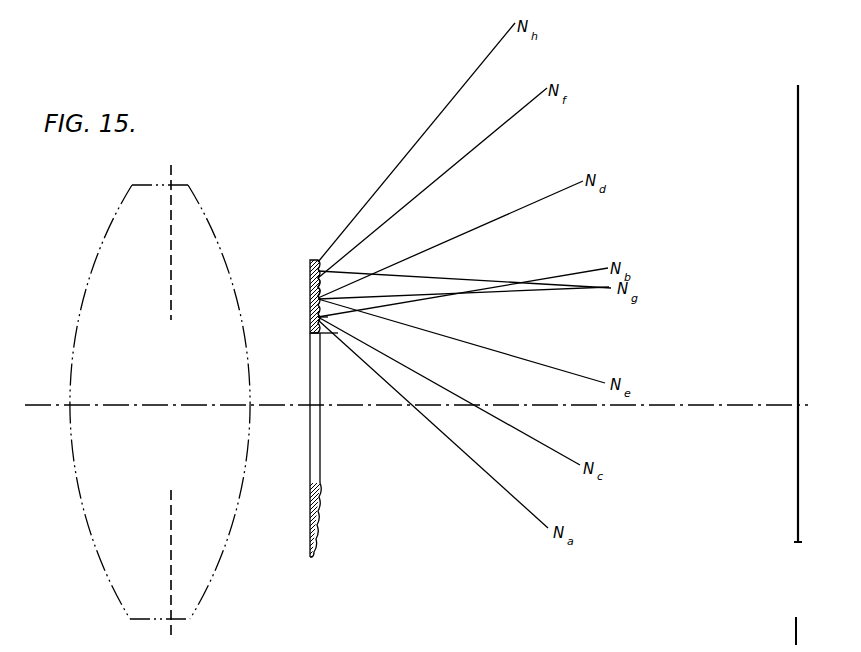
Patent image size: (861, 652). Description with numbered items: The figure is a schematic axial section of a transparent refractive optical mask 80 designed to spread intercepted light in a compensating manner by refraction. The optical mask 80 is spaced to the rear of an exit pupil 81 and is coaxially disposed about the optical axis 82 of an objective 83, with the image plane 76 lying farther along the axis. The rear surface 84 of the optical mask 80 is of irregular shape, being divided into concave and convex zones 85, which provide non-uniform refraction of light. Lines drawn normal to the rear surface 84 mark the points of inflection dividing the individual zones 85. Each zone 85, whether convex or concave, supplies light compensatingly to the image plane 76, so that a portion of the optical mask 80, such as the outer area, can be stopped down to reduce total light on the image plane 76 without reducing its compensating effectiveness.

The image plane 76 is at (798, 200).
The optical mask 80 is at (309, 281).
The exit pupil 81 is at (166, 454).
The optical axis 82 is at (622, 408).
The objective 83 is at (108, 233).
The rear surface 84 is at (318, 288).
The concave and convex zones 85 is at (328, 317).